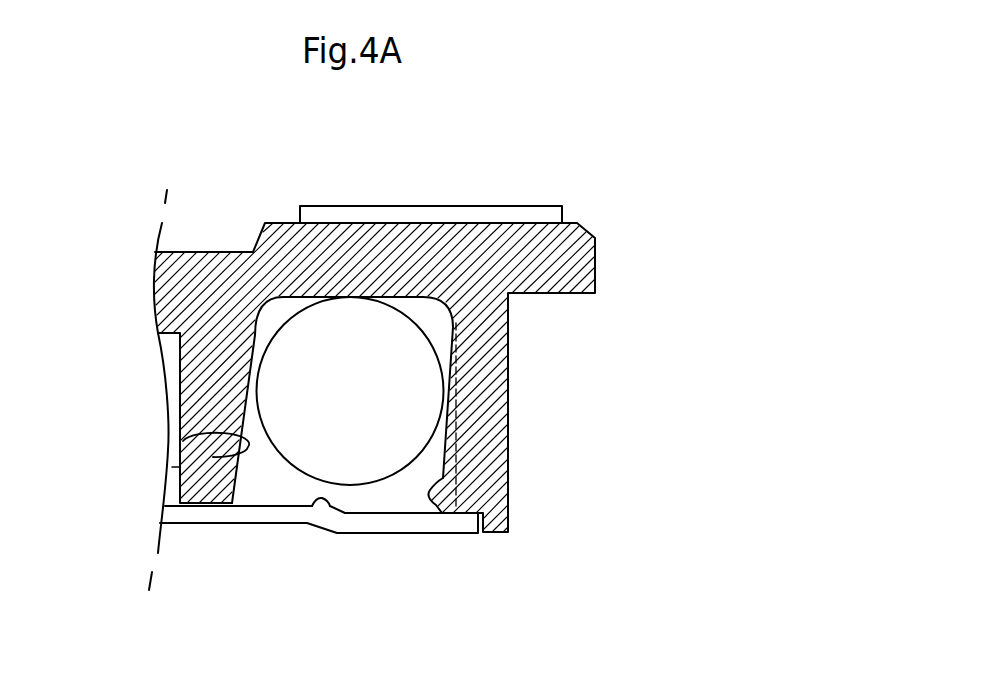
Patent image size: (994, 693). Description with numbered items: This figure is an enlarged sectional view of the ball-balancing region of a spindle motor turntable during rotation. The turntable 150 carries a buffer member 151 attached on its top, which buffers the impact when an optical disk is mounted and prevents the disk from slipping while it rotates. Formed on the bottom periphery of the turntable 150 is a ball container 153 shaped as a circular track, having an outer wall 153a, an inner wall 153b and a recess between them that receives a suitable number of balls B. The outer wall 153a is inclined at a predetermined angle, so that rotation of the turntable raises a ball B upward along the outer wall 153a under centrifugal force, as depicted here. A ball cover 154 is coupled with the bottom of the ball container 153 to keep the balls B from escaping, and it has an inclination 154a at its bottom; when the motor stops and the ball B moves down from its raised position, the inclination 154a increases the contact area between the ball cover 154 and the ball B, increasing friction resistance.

The turntable 150 is at (603, 211).
The buffer member 151 is at (426, 213).
The ball container 153 is at (437, 325).
The outer wall 153a is at (436, 503).
The inner wall 153b is at (183, 441).
The ball cover 154 is at (407, 523).
The inclination 154a is at (318, 505).
The ball B is at (353, 330).